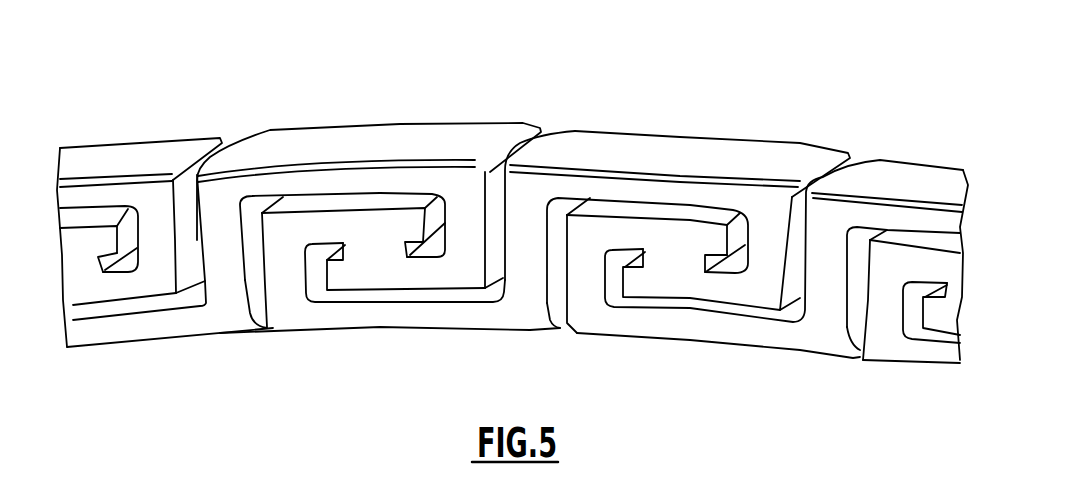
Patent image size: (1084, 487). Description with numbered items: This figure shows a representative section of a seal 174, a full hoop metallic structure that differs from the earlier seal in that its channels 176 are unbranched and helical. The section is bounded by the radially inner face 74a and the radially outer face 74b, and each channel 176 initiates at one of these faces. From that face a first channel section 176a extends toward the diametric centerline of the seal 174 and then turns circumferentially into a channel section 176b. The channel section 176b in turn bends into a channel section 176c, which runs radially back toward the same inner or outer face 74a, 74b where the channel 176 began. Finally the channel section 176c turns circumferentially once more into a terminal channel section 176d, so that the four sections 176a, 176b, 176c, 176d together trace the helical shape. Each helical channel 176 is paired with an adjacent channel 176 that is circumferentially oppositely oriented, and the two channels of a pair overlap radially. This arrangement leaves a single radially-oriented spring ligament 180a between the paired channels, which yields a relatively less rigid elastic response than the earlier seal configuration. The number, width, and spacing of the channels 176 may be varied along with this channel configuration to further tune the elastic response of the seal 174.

The radially inner face 74a is at (402, 330).
The radially outer face 74b is at (350, 140).
The seal 174 is at (275, 366).
The channel 176 is at (498, 221).
The first channel section 176a is at (255, 268).
The channel section 176b is at (363, 205).
The channel section 176c is at (438, 222).
The terminal channel section 176d is at (417, 250).
The spring ligament 180a is at (373, 242).